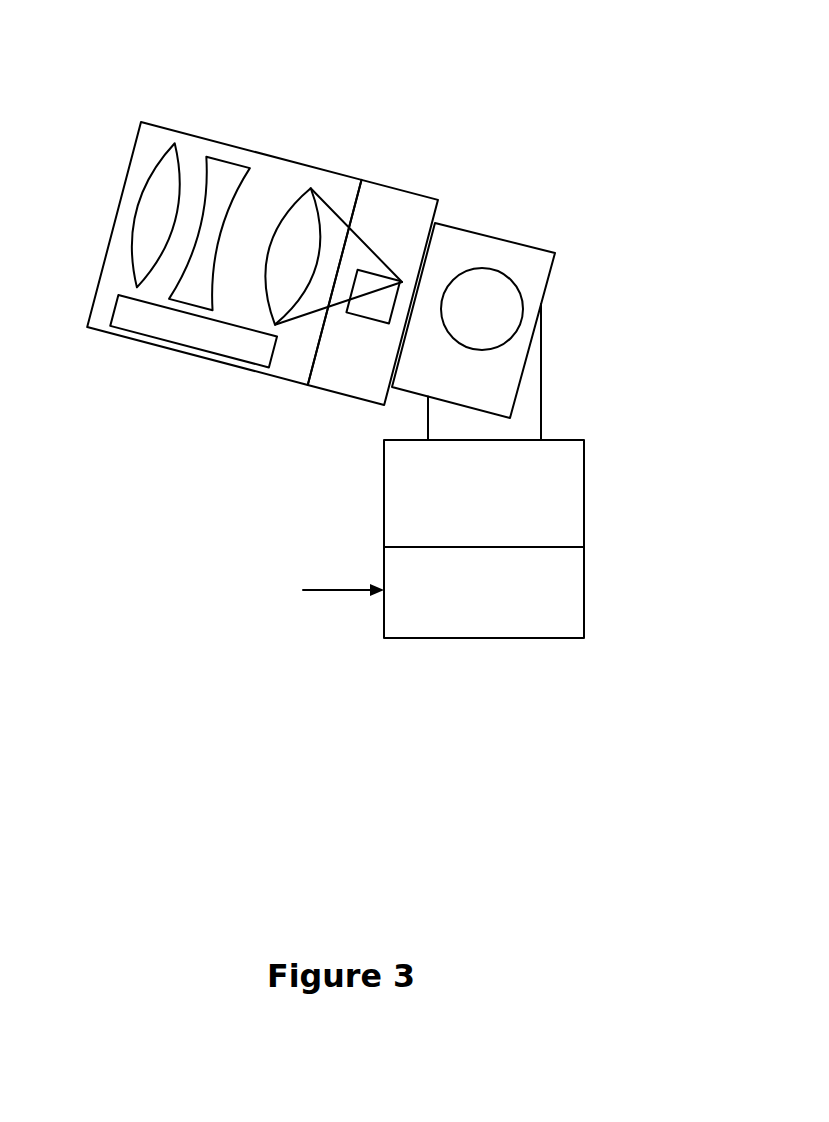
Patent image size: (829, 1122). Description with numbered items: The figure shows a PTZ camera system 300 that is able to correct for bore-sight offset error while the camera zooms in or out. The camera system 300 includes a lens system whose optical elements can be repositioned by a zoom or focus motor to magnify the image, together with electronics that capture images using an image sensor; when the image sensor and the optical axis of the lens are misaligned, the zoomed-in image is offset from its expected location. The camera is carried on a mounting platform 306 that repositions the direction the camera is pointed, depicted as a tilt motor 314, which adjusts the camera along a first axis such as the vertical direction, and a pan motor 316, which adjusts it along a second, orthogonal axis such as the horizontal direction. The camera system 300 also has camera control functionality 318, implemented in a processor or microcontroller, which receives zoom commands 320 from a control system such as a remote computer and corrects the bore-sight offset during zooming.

The camera system 300 is at (433, 22).
The mounting platform 306 is at (590, 548).
The tilt motor 314 is at (490, 268).
The pan motor 316 is at (384, 496).
The camera control functionality 318 is at (584, 610).
The zoom commands 320 is at (203, 603).